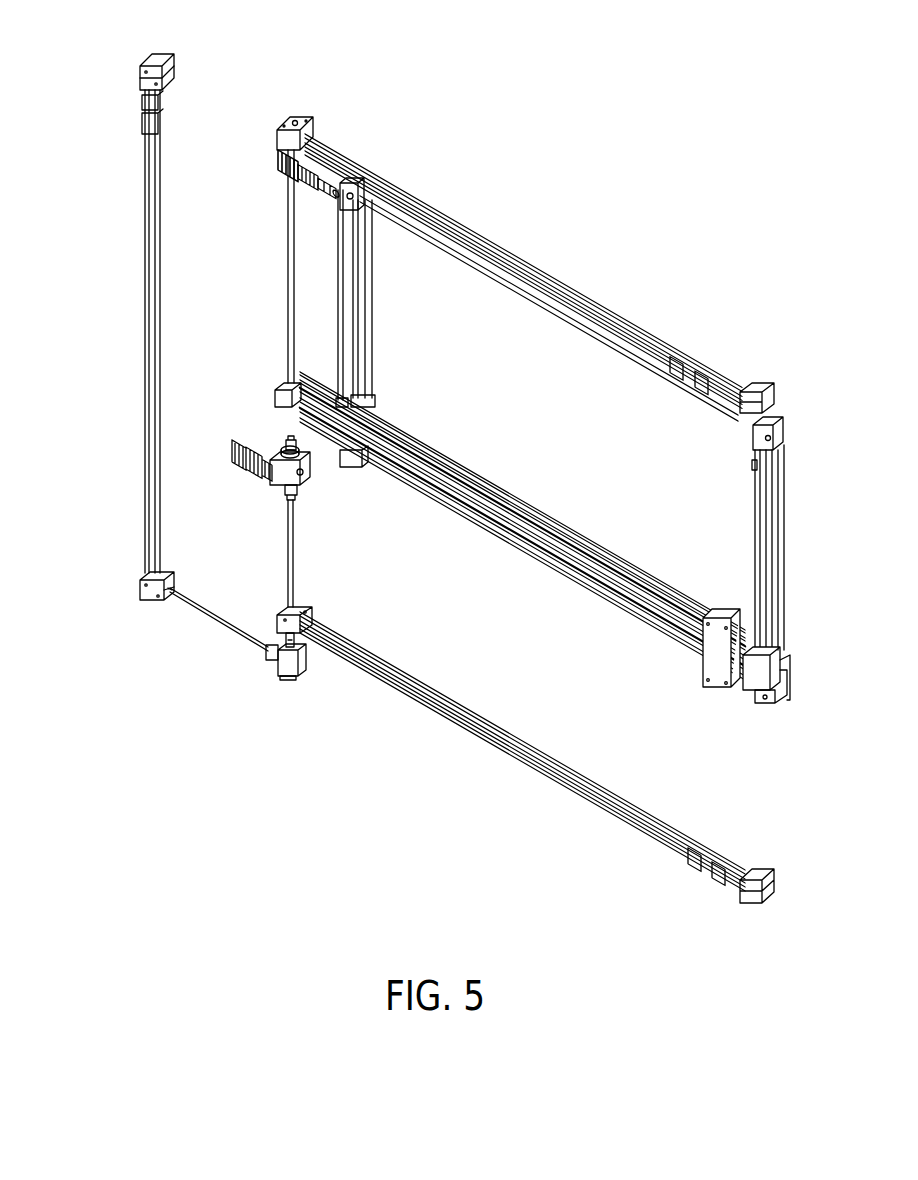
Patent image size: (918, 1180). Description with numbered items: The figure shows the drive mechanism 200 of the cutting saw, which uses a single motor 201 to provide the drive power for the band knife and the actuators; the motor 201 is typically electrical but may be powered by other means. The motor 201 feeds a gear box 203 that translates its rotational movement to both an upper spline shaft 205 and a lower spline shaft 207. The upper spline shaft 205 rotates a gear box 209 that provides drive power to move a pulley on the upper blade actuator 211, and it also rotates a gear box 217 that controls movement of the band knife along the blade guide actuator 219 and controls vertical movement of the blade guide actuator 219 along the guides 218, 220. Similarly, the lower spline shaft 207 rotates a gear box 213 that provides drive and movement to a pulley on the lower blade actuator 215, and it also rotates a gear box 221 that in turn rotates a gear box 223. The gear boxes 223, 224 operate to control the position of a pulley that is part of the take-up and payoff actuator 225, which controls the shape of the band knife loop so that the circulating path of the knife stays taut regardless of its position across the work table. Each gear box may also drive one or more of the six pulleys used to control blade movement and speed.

The drive mechanism 200 is at (464, 497).
The motor 201 is at (244, 458).
The gear box 203 is at (298, 478).
The upper spline shaft 205 is at (288, 247).
The lower spline shaft 207 is at (288, 548).
The gear box 209 is at (300, 119).
The upper blade actuator 211 is at (648, 326).
The gear box 213 is at (312, 621).
The lower blade actuator 215 is at (592, 801).
The gear box 217 is at (282, 387).
The guide 218 is at (362, 312).
The blade guide actuator 219 is at (528, 508).
The guide 220 is at (777, 548).
The gear box 221 is at (283, 672).
The gear box 223 is at (140, 593).
The gear box 224 is at (166, 72).
The take-up and payoff actuator 225 is at (145, 285).